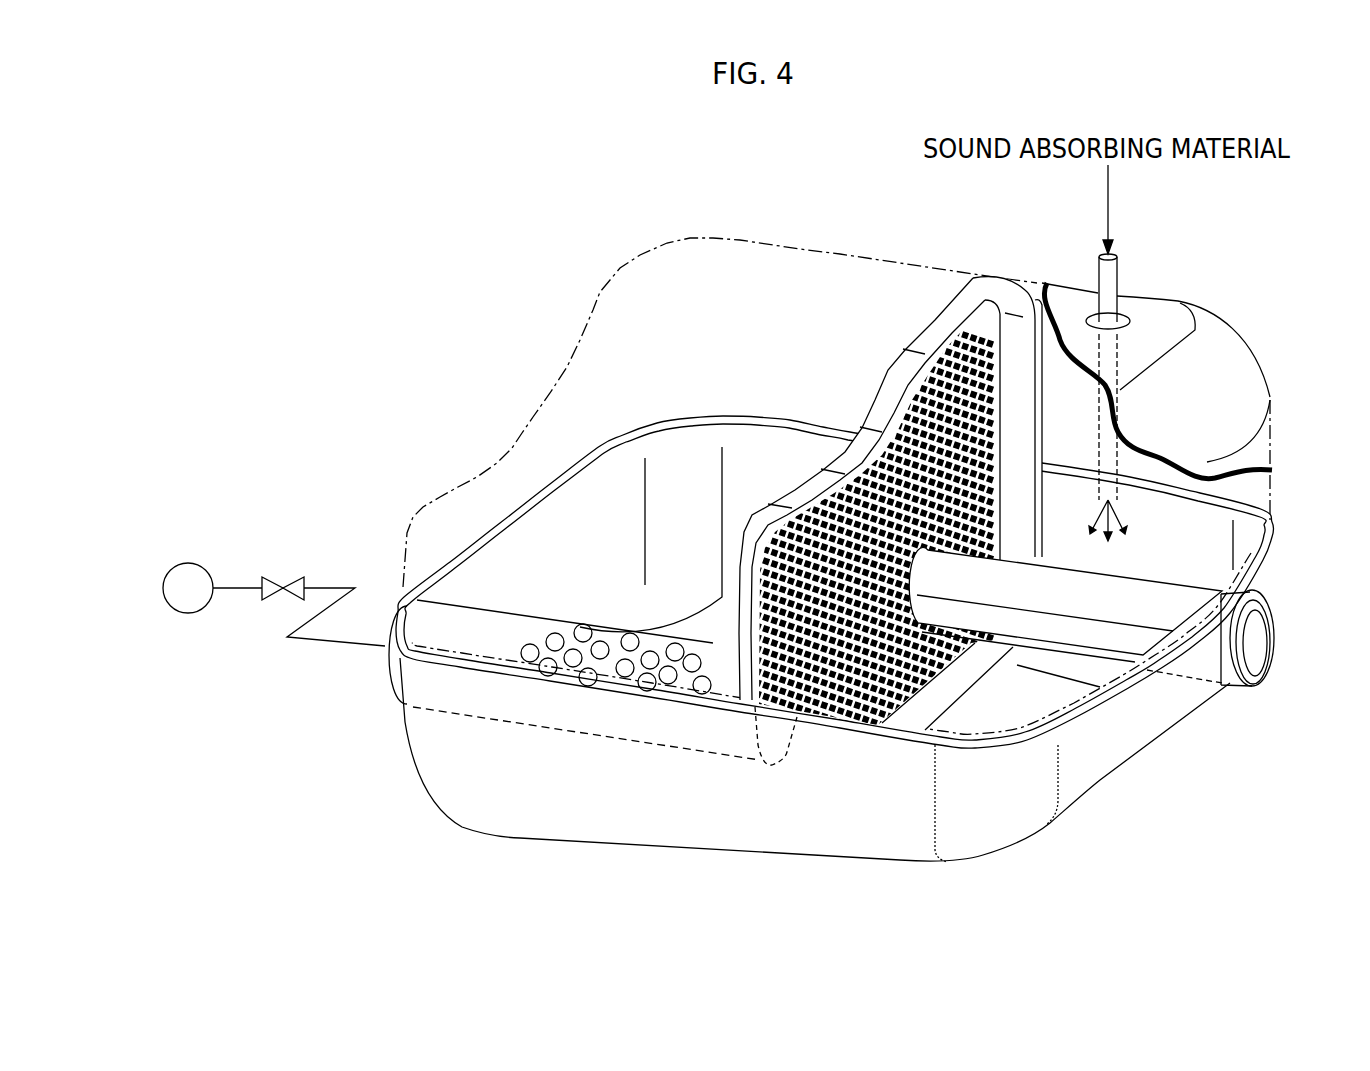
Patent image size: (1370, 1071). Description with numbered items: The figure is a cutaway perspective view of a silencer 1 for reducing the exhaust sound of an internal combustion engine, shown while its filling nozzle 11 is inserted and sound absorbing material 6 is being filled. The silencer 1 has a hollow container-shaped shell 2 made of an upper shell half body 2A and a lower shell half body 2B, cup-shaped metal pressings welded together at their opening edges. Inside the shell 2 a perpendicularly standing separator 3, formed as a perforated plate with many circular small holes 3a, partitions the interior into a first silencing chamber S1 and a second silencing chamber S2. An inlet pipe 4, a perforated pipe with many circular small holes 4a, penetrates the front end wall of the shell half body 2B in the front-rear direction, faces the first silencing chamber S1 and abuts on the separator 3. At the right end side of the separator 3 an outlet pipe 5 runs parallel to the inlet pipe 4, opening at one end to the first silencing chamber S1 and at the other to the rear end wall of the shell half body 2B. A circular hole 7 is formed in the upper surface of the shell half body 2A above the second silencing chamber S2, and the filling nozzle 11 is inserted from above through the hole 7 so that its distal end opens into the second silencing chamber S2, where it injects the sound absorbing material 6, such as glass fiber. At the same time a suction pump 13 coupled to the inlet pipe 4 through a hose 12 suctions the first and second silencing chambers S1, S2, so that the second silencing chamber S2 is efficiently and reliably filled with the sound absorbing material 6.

The silencer 1 is at (1200, 296).
The shell 2 is at (1284, 449).
The shell half body 2A is at (1217, 357).
The shell half body 2B is at (1123, 763).
The separator 3 is at (883, 368).
The small holes 3a is at (997, 458).
The inlet pipe 4 is at (558, 612).
The small holes 4a is at (620, 668).
The outlet pipe 5 is at (1117, 603).
The sound absorbing material 6 is at (1093, 513).
The hole 7 is at (1122, 324).
The filling nozzle 11 is at (1107, 288).
The hose 12 is at (347, 650).
The suction pump 13 is at (183, 562).
The first silencing chamber S1 is at (700, 549).
The second silencing chamber S2 is at (1040, 709).